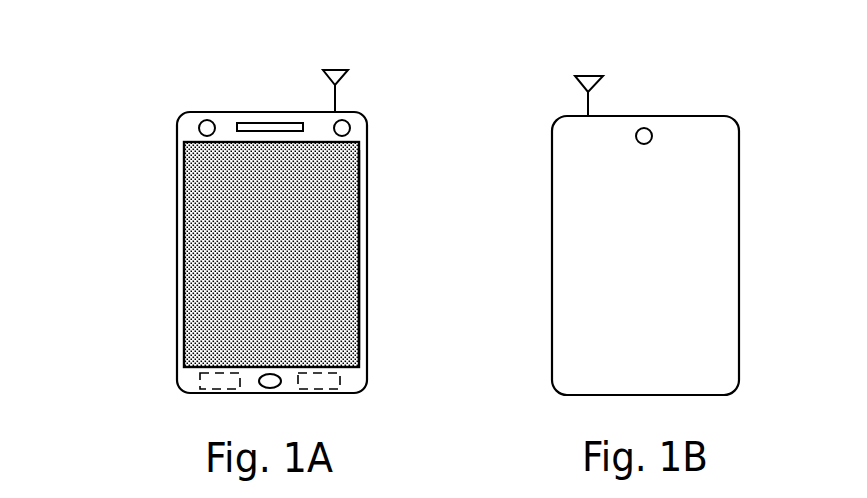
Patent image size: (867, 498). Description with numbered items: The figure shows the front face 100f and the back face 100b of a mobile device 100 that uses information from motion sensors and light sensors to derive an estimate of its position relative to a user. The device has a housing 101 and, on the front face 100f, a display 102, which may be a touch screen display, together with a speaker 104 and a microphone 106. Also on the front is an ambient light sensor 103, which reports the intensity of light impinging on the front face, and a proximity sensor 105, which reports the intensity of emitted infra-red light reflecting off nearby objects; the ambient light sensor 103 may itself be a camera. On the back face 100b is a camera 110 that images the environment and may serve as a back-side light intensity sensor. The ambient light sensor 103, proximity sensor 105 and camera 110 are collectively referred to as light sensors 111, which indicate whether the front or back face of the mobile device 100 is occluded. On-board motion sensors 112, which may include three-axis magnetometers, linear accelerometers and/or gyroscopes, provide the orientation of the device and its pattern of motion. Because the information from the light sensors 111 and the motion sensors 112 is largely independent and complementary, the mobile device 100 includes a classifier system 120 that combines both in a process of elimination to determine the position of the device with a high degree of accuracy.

In FIG. 1A, the mobile device 100 is at (241, 218).
In FIG. 1B, the mobile device 100 is at (613, 234).
In FIG. 1A, the front face 100f is at (218, 208).
In FIG. 1B, the back face 100b is at (712, 213).
In FIG. 1A, the housing 101 is at (177, 277).
In FIG. 1B, the housing 101 is at (552, 165).
In FIG. 1A, the display 102 is at (360, 260).
In FIG. 1A, the ambient light sensor 103 is at (342, 119).
In FIG. 1A, the speaker 104 is at (273, 123).
In FIG. 1A, the proximity sensor 105 is at (203, 120).
In FIG. 1A, the microphone 106 is at (270, 388).
In FIG. 1B, the camera 110 is at (648, 128).
In FIG. 1A, the light sensors 111 is at (212, 88).
In FIG. 1A, the motion sensors 112 is at (340, 380).
In FIG. 1A, the classifier system 120 is at (200, 381).